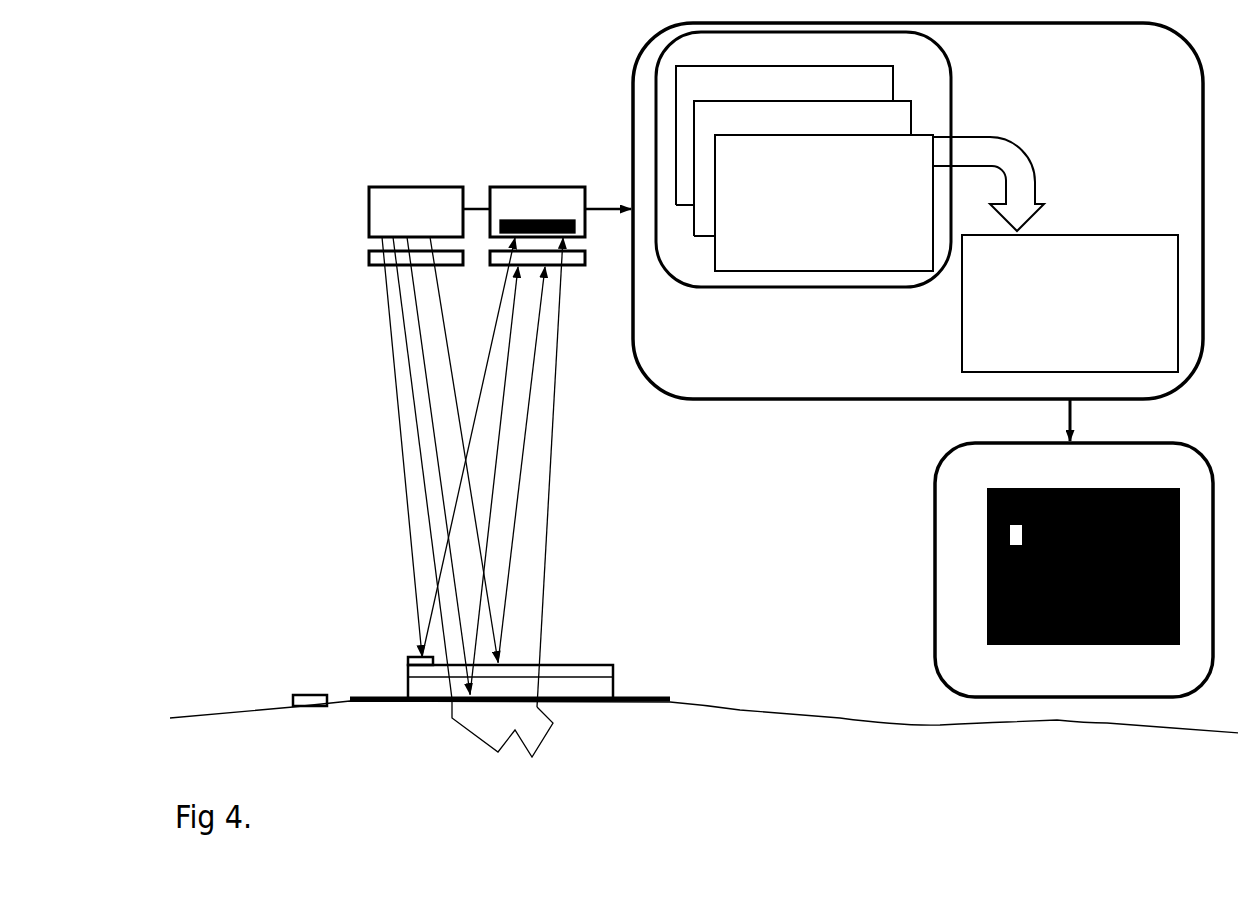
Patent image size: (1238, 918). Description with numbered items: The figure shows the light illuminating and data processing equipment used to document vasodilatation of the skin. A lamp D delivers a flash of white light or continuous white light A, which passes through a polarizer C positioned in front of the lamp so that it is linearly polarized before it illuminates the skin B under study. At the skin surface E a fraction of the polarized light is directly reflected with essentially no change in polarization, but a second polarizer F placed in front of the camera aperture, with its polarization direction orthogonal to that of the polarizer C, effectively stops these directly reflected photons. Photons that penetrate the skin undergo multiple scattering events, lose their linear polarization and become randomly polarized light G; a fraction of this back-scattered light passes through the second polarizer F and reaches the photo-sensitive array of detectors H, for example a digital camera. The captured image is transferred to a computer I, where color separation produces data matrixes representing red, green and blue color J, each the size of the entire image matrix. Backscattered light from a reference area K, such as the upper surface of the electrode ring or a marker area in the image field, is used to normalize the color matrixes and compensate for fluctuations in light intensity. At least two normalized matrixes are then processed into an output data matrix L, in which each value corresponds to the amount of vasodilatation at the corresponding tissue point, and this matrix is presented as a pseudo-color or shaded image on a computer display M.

The flash of white light or continuous white light A is at (417, 346).
The skin B is at (532, 743).
The polarizer C is at (359, 255).
The lamp delivering a flash of white light or continuous white light D is at (423, 172).
The skin surface E is at (704, 704).
The second polarizer F is at (502, 269).
The randomly polarized light G is at (551, 512).
The photo-sensitive array of detectors H is at (531, 212).
The computer I is at (894, 211).
The data matrixes representing red, green and blue color J is at (803, 159).
The reference area K is at (420, 655).
The output data matrix L is at (1055, 254).
The computer display M is at (1074, 548).